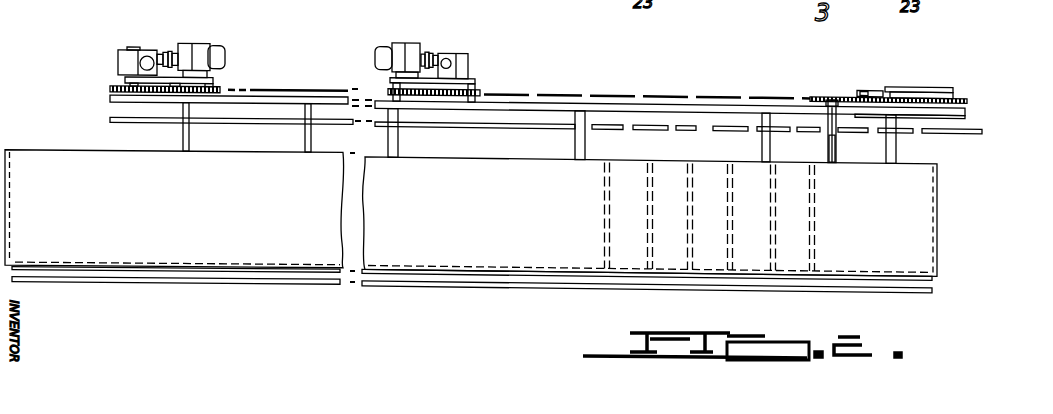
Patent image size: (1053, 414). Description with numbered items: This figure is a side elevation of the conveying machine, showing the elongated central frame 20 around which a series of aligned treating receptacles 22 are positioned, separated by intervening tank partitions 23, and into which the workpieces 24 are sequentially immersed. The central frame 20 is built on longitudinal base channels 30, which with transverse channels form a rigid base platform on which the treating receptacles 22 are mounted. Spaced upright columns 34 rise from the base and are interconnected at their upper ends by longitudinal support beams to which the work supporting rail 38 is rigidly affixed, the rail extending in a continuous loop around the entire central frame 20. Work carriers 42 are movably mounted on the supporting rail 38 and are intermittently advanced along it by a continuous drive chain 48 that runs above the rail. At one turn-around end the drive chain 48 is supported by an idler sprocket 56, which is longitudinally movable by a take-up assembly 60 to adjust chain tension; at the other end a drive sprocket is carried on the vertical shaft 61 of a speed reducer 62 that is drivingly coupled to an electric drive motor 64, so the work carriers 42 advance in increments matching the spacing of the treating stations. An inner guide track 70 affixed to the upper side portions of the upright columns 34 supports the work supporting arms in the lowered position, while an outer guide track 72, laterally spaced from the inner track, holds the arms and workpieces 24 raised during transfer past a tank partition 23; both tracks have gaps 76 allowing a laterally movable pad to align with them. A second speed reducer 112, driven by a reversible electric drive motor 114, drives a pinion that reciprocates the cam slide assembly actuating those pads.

The central frame 20 is at (408, 146).
The treating receptacles 22 is at (32, 158).
The tank partitions 23 is at (605, 205).
The workpieces 24 is at (849, 148).
The longitudinal base channels 30 is at (261, 277).
The upright columns 34 is at (305, 134).
The work supporting rail 38 is at (547, 107).
The work carriers 42 is at (823, 100).
The drive chain 48 is at (221, 89).
The idler sprocket 56 is at (957, 97).
The take-up assembly 60 is at (910, 88).
The vertical shaft 61 is at (125, 80).
The speed reducer 62 is at (130, 58).
The electric drive motor 64 is at (197, 48).
The inner guide track 70 is at (527, 130).
The outer guide track 72 is at (695, 131).
The gaps 76 is at (667, 128).
The speed reducer 112 is at (469, 65).
The reversible electric drive motor 114 is at (403, 50).